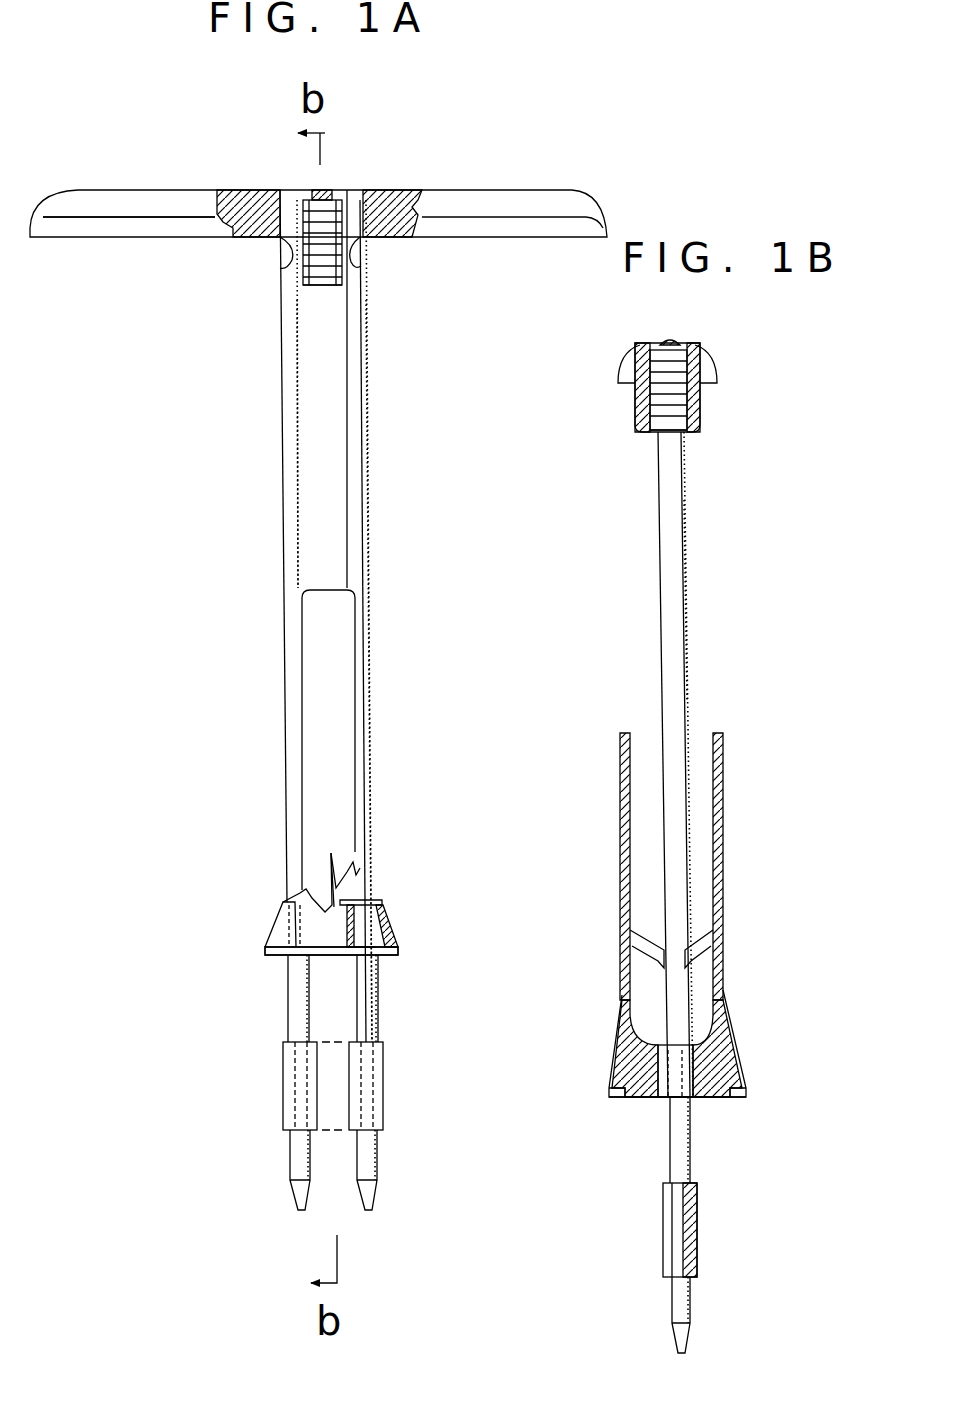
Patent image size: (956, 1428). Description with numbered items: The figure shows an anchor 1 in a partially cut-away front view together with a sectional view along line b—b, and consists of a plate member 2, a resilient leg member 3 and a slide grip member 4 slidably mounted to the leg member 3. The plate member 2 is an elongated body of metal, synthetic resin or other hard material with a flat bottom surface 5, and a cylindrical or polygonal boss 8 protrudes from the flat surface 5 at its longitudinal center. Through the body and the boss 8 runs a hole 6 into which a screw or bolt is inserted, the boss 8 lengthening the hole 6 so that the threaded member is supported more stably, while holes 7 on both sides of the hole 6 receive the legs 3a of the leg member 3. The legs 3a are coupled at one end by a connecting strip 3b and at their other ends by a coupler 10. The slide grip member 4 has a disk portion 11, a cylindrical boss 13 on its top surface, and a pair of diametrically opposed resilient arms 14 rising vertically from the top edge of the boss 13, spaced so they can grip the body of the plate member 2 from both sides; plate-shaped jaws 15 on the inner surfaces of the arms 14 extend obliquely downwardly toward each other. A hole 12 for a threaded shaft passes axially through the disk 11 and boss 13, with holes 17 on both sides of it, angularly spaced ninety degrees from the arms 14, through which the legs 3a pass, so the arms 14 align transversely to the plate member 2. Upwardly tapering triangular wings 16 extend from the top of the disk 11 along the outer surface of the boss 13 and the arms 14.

In FIG. 1A, the anchor 1 is at (518, 185).
In FIG. 1A, the plate member 2 is at (240, 197).
In FIG. 1B, the plate member 2 is at (620, 375).
In FIG. 1A, the resilient leg member 3 is at (278, 416).
In FIG. 1B, the resilient leg member 3 is at (686, 572).
In FIG. 1A, the legs 3a is at (292, 500).
In FIG. 1B, the legs 3a is at (672, 640).
In FIG. 1A, the connecting strip 3b is at (300, 196).
In FIG. 1B, the connecting strip 3b is at (670, 345).
In FIG. 1A, the slide grip member 4 is at (263, 918).
In FIG. 1B, the slide grip member 4 is at (600, 1090).
In FIG. 1A, the flat bottom surface 5 is at (135, 240).
In FIG. 1A, the hole 6 is at (333, 212).
In FIG. 1B, the hole 6 is at (675, 405).
In FIG. 1A, the holes 7 is at (285, 270).
In FIG. 1A, the boss 8 is at (335, 275).
In FIG. 1B, the boss 8 is at (642, 408).
In FIG. 1A, the coupler 10 is at (325, 1098).
In FIG. 1B, the coupler 10 is at (690, 1220).
In FIG. 1A, the disk portion 11 is at (275, 955).
In FIG. 1B, the disk portion 11 is at (620, 1100).
In FIG. 1A, the hole 12 is at (332, 940).
In FIG. 1B, the hole 12 is at (682, 1060).
In FIG. 1A, the cylindrical boss 13 is at (356, 918).
In FIG. 1B, the cylindrical boss 13 is at (705, 1045).
In FIG. 1A, the resilient arms 14 is at (315, 690).
In FIG. 1B, the resilient arms 14 is at (628, 765).
In FIG. 1B, the plate-shaped jaws 15 is at (645, 925).
In FIG. 1A, the triangular wings 16 is at (388, 935).
In FIG. 1B, the triangular wings 16 is at (625, 1065).
In FIG. 1A, the holes 17 is at (375, 862).
In FIG. 1B, the holes 17 is at (660, 1100).